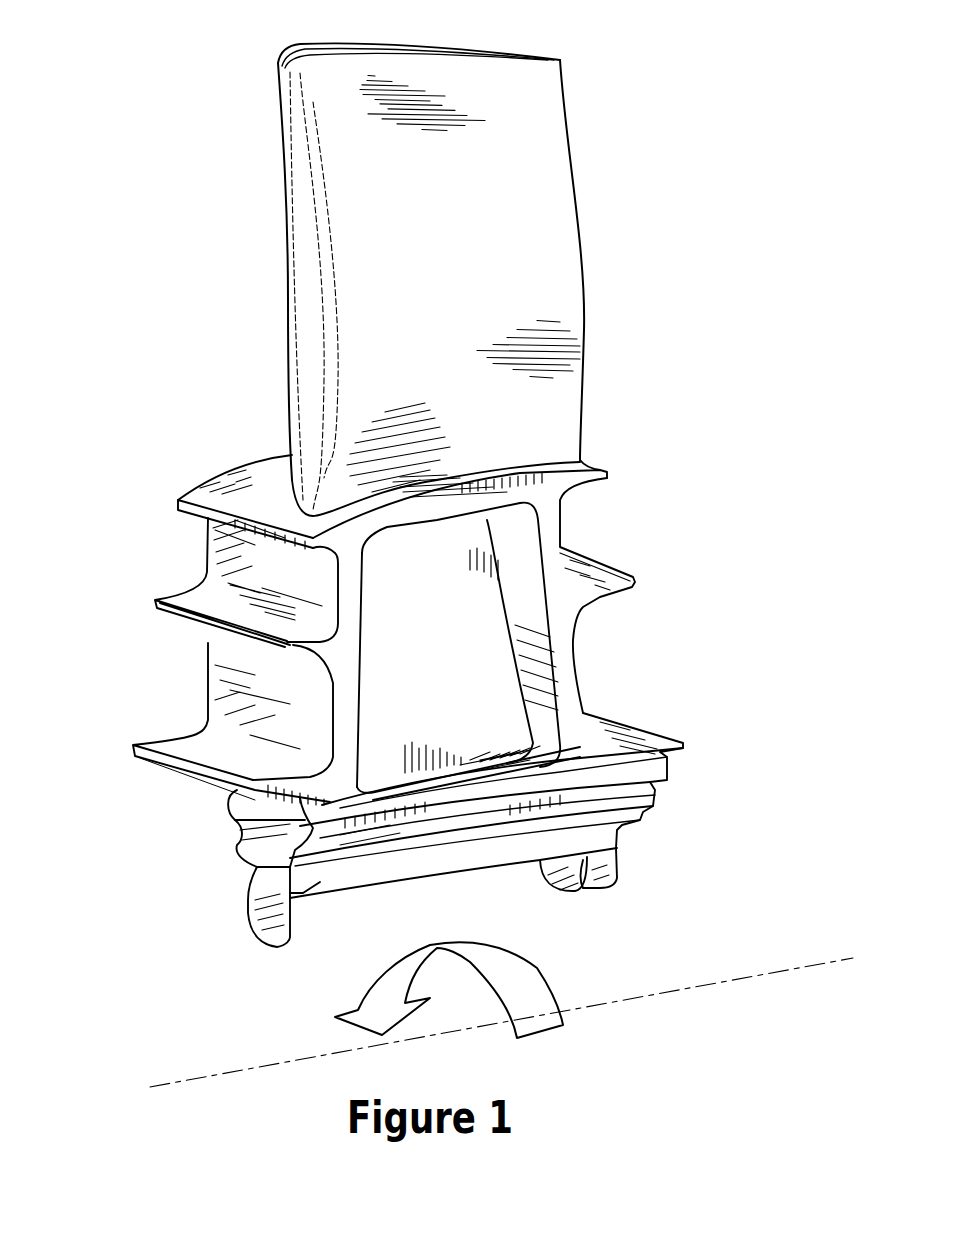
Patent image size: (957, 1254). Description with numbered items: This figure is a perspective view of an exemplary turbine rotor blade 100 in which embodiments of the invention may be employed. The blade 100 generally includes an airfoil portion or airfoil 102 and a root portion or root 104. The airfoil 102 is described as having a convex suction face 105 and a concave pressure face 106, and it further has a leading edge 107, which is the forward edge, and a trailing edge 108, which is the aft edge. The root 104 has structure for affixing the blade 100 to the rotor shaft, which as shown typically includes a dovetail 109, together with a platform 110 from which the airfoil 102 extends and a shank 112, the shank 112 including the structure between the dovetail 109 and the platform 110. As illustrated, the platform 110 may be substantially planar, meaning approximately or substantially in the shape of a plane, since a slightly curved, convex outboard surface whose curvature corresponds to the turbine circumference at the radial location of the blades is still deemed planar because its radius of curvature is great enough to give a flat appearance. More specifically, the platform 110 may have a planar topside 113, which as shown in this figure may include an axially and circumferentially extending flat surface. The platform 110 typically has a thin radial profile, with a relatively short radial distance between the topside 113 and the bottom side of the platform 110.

The turbine rotor blade 100 is at (718, 326).
The airfoil 102 is at (428, 279).
The root 104 is at (428, 690).
The suction face 105 is at (270, 212).
The pressure face 106 is at (478, 332).
The leading edge 107 is at (318, 372).
The trailing edge 108 is at (580, 223).
The dovetail 109 is at (245, 936).
The platform 110 is at (380, 482).
The shank 112 is at (130, 683).
The topside 113 is at (285, 507).